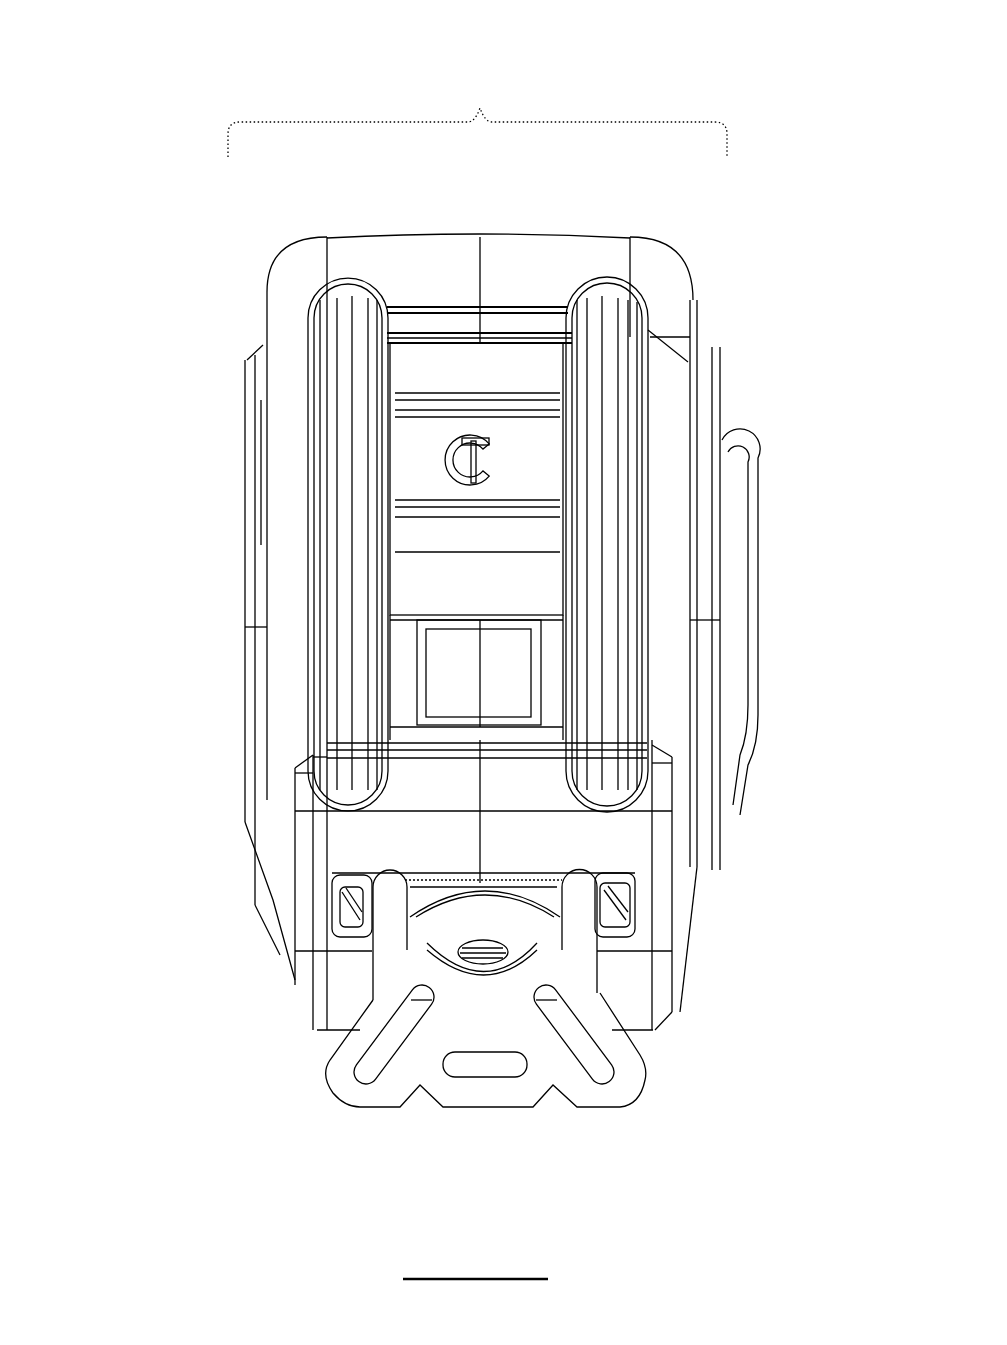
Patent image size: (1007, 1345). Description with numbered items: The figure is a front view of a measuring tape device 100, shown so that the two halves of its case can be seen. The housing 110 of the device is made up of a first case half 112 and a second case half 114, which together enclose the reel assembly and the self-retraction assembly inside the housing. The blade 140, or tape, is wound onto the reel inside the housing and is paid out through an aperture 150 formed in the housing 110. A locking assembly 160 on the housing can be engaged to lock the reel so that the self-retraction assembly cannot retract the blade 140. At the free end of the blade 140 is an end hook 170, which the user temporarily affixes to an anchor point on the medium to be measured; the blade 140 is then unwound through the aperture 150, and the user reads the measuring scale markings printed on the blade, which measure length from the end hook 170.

The measuring tape device 100 is at (446, 642).
The housing 110 is at (553, 587).
The first case half 112 is at (316, 565).
The second case half 114 is at (697, 599).
The blade 140 is at (699, 905).
The aperture 150 is at (238, 928).
The locking assembly 160 is at (594, 520).
The end hook 170 is at (515, 1001).